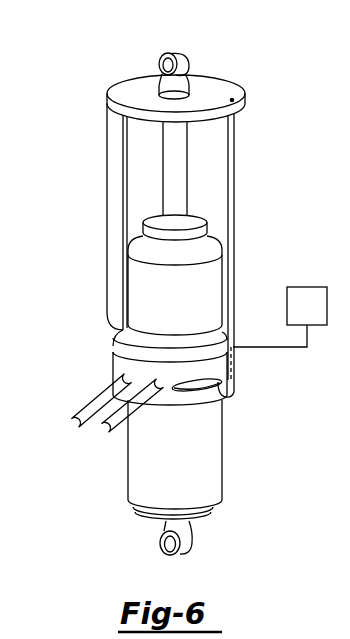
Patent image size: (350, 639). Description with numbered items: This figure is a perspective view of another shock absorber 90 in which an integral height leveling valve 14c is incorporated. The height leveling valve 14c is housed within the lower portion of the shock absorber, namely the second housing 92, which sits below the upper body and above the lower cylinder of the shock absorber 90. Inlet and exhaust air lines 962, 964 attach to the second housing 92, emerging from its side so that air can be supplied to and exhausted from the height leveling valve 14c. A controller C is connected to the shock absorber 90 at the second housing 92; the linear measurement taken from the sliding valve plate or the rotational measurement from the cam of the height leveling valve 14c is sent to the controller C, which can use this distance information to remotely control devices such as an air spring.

The shock absorber 90 is at (228, 68).
The second housing 92 is at (157, 375).
The height leveling valve 14c is at (234, 396).
The inlet air line 962 is at (73, 428).
The exhaust air line 964 is at (107, 433).
The controller C is at (279, 333).